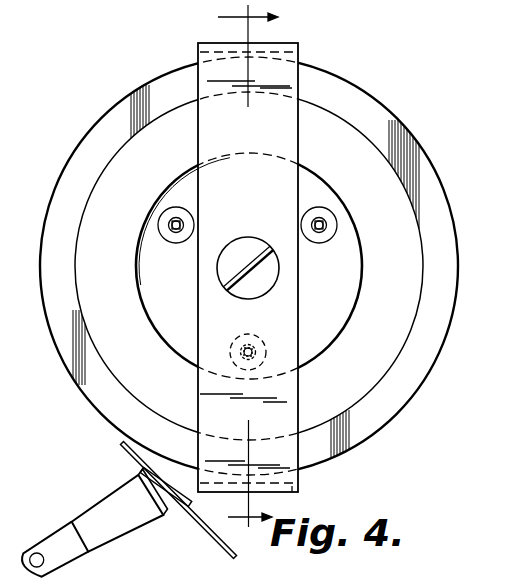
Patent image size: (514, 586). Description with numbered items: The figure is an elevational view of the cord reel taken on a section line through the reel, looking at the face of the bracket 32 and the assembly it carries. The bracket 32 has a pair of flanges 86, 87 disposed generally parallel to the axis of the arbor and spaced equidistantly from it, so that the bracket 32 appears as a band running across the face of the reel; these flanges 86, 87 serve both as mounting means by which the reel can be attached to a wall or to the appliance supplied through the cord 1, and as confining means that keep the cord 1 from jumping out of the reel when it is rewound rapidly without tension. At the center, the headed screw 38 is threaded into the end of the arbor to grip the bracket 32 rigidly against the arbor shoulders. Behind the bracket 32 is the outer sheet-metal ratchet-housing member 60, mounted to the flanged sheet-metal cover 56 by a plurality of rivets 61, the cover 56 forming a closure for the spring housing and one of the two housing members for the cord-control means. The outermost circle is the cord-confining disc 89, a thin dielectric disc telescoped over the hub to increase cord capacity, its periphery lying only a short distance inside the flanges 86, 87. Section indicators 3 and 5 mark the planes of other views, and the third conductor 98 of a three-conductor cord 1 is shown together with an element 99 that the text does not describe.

The cord 1 is at (184, 480).
The section line 3 is at (513, 467).
The section line 5 is at (237, 266).
The bracket 32 is at (271, 207).
The headed screw 38 is at (246, 295).
The sheet-metal cover 56 is at (400, 281).
The outer sheet-metal ratchet-housing member 60 is at (332, 311).
The rivets 61 is at (173, 232).
The flange 86 is at (277, 42).
The flange 87 is at (296, 487).
The cord-confining disc 89 is at (432, 337).
The third conductor 98 is at (180, 508).
The bar 99 is at (219, 547).